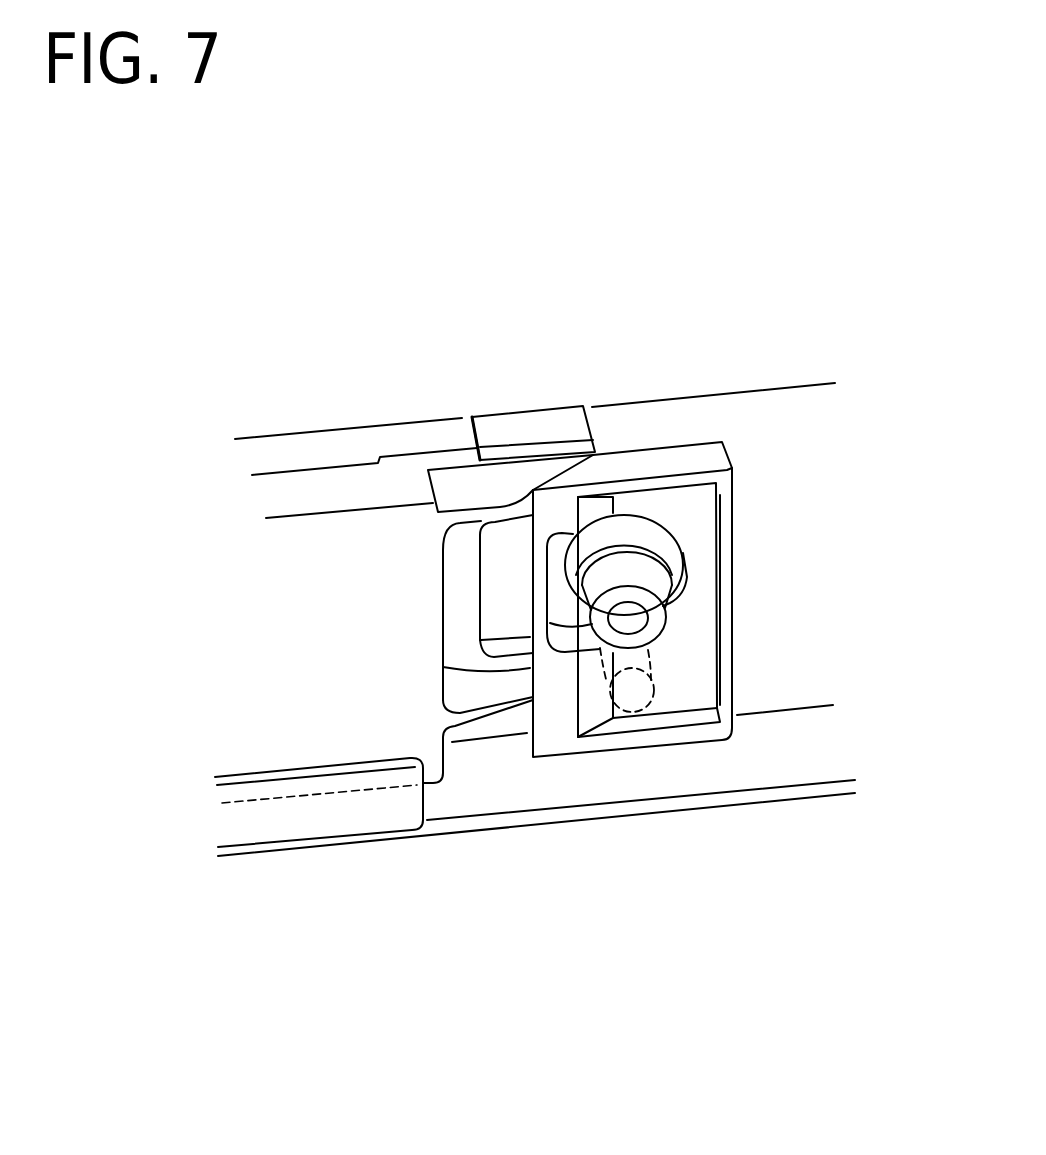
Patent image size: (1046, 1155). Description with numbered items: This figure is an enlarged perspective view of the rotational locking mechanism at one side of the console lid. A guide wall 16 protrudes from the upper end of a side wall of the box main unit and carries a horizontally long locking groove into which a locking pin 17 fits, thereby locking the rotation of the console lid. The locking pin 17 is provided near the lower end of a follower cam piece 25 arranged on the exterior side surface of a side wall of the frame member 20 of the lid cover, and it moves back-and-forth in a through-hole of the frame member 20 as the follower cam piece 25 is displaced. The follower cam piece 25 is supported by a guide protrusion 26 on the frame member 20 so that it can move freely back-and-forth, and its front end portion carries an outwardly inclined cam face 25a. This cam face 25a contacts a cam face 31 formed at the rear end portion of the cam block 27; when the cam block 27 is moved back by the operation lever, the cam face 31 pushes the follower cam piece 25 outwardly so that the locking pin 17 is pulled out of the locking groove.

The frame member 20 is at (583, 371).
The guide wall 16 is at (777, 423).
The follower cam piece 25 is at (702, 615).
The cam face 25a is at (558, 477).
The guide protrusion 26 is at (657, 623).
The locking pin 17 is at (613, 643).
The cam face 31 is at (520, 707).
The cam block 27 is at (315, 722).